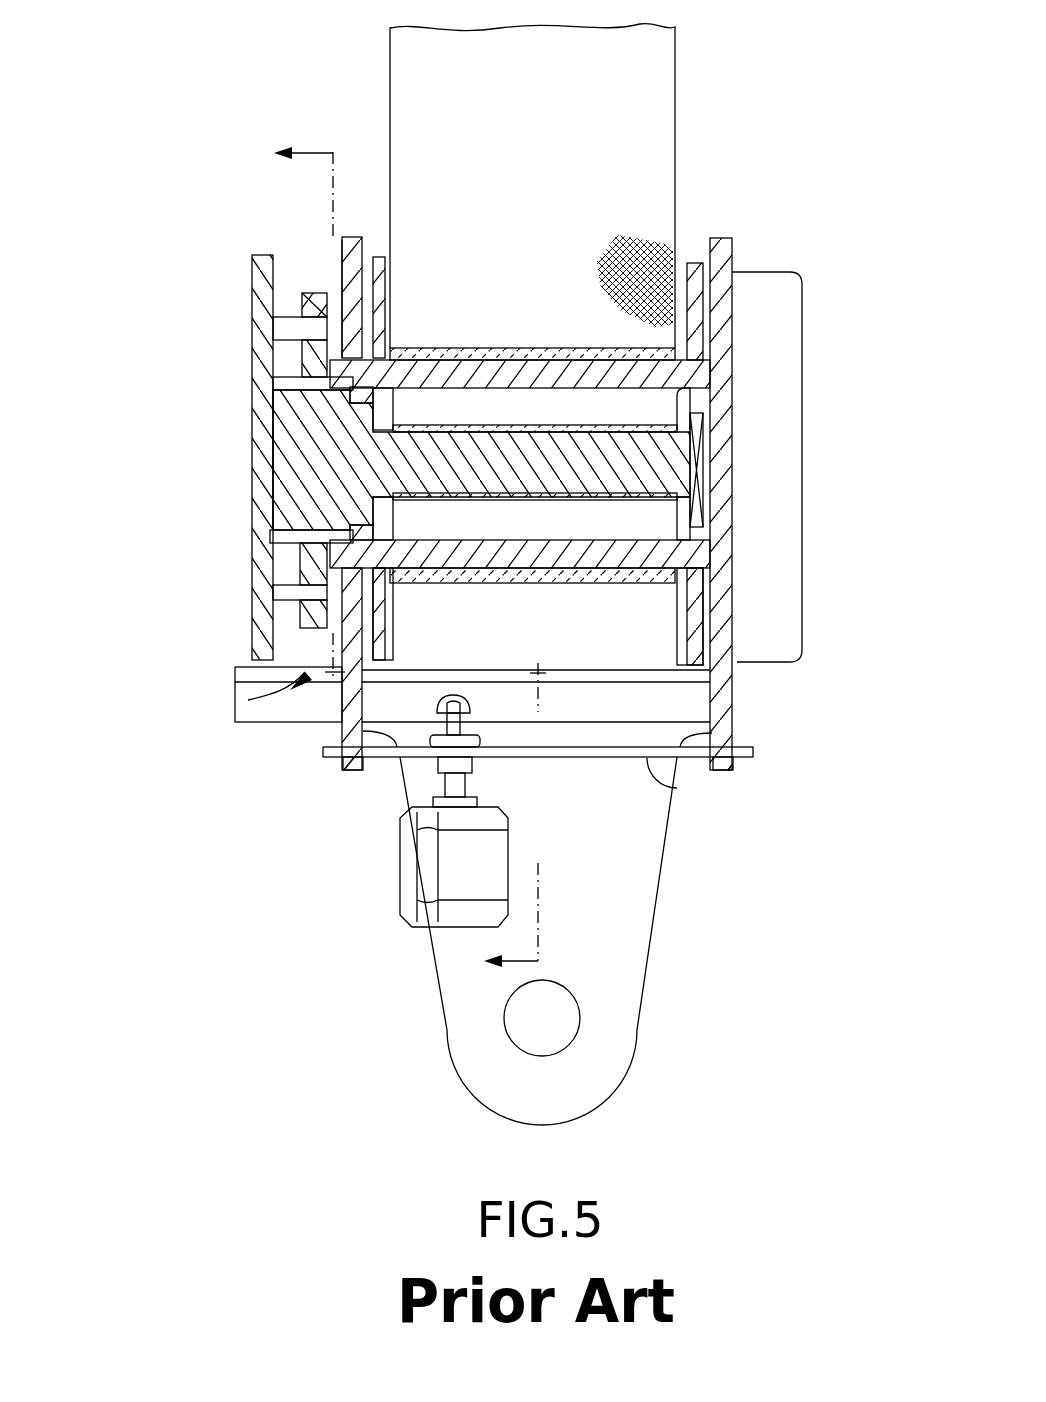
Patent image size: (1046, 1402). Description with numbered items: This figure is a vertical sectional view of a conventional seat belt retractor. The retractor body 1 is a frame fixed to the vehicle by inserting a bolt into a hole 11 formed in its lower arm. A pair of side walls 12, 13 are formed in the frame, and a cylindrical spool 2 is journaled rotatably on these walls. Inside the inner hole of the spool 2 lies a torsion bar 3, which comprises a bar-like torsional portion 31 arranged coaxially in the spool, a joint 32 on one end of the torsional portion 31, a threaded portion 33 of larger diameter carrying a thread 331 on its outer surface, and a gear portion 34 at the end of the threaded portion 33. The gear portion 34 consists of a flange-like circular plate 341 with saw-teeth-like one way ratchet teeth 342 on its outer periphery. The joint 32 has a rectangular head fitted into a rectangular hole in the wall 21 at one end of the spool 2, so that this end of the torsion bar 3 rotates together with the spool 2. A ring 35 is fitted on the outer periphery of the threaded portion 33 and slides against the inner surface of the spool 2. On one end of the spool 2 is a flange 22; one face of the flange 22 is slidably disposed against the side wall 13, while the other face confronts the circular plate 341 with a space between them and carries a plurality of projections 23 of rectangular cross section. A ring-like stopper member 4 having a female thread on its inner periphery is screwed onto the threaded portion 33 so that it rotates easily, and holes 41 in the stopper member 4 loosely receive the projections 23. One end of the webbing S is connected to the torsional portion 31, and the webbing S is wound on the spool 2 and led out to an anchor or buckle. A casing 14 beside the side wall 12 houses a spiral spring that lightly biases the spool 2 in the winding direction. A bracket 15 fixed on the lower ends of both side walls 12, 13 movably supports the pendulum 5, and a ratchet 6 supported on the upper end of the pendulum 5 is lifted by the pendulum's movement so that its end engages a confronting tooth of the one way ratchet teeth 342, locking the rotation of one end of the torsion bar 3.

The webbing S is at (647, 173).
The retractor body 1 is at (666, 882).
The spool 2 is at (592, 372).
The torsion bar 3 is at (715, 452).
The stopper member 4 is at (252, 390).
The pendulum 5 is at (473, 890).
The ratchet 6 is at (270, 772).
The hole 11 is at (581, 1016).
The side wall 12 is at (718, 290).
The side wall 13 is at (345, 238).
The casing 14 is at (777, 560).
The bracket 15 is at (650, 768).
The wall 21 is at (733, 483).
The flange 22 is at (337, 293).
The projections 23 is at (292, 325).
The torsional portion 31 is at (500, 468).
The joint 32 is at (645, 465).
The threaded portion 33 is at (300, 490).
The gear portion 34 is at (256, 462).
The ring 35 is at (393, 357).
The holes 41 is at (306, 293).
The thread 331 is at (290, 582).
The circular plate 341 is at (300, 356).
The one way ratchet teeth 342 is at (248, 665).